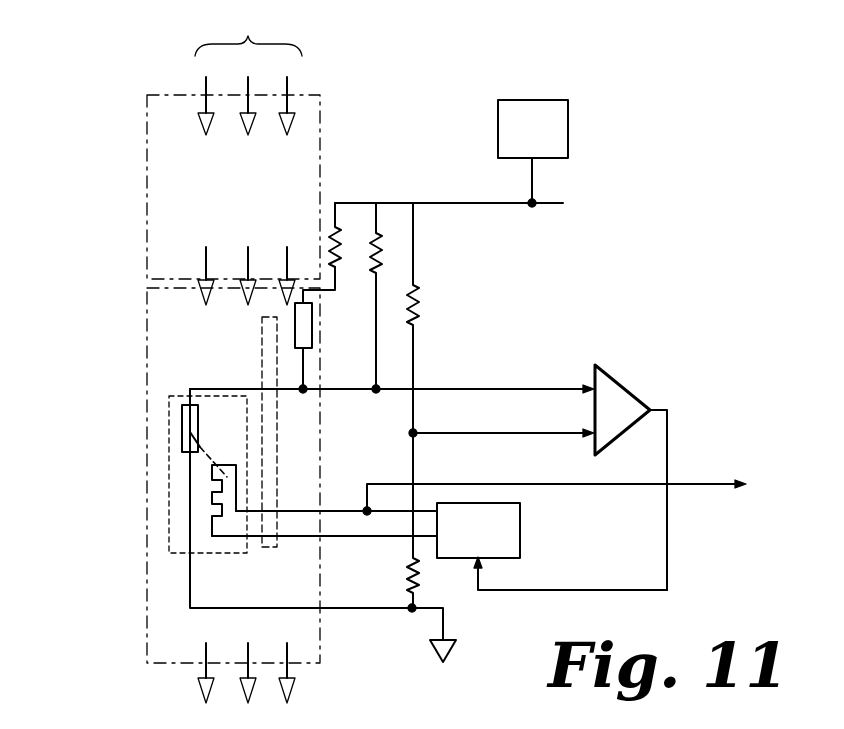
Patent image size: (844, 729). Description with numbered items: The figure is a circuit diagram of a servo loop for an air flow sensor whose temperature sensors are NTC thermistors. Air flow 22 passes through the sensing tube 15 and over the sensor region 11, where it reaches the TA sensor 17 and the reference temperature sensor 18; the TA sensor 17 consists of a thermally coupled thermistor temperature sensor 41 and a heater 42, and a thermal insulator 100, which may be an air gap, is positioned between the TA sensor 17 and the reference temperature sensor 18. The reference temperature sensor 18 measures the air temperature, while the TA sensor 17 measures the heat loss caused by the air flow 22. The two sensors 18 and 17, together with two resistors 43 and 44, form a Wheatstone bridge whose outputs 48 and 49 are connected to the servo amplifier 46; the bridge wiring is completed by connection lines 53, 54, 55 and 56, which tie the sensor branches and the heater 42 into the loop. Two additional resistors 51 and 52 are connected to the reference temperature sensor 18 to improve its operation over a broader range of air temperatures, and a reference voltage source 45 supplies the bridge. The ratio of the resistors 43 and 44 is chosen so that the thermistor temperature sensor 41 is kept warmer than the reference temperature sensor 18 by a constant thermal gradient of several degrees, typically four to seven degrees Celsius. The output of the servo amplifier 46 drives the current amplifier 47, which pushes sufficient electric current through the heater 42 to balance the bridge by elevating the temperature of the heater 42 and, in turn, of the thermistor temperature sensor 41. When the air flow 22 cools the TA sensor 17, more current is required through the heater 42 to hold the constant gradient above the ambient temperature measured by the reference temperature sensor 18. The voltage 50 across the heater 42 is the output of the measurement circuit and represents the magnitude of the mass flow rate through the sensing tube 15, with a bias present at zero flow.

The sensor housing / lower dashed region 11 is at (160, 638).
The sensing tube 15 is at (170, 148).
The TA sensor 17 is at (172, 540).
The reference temperature sensor 18 is at (300, 322).
The air flow 22 is at (248, 67).
The thermistor temperature sensor 41 is at (183, 413).
The heater 42 is at (212, 487).
The resistor 43 is at (418, 308).
The resistor 44 is at (405, 578).
The reference voltage source 45 is at (510, 135).
The servo amplifier 46 is at (613, 398).
The current amplifier 47 is at (512, 523).
The output 48 is at (460, 430).
The output 49 is at (545, 388).
The voltage 50 is at (574, 490).
The resistor 51 is at (378, 250).
The resistor 52 is at (333, 250).
The connection line 53 is at (198, 387).
The connection line 54 is at (190, 578).
The connection line 55 is at (289, 508).
The connection line 56 is at (298, 535).
The thermal insulator 100 is at (265, 372).